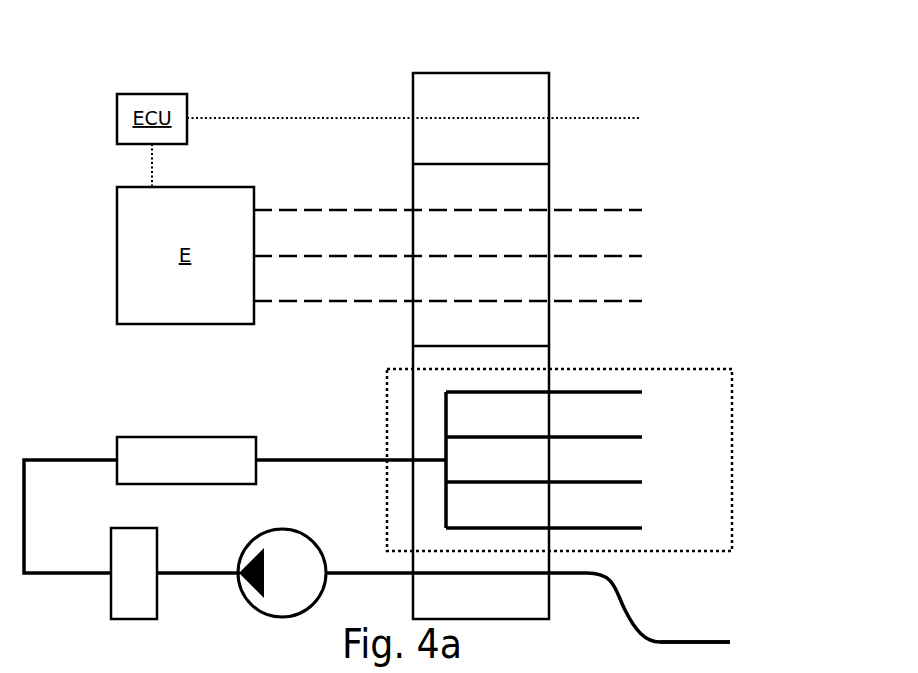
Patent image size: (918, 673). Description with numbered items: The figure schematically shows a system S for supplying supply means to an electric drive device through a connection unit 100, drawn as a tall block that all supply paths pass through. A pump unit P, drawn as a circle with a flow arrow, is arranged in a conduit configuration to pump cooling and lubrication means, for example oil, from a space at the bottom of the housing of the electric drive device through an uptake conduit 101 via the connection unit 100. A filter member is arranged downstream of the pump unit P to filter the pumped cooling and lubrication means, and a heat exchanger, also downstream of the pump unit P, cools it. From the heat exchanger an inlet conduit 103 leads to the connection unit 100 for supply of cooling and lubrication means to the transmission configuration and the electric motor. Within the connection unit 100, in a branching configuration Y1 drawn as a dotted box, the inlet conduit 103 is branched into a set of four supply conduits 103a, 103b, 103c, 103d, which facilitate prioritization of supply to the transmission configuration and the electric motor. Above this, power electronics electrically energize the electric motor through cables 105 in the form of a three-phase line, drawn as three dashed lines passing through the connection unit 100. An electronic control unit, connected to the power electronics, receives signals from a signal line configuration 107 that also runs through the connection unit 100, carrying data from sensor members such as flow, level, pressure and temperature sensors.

The connection unit 100 is at (476, 63).
The uptake conduit 101 is at (686, 640).
The inlet conduit 103 is at (298, 458).
The supply conduit 103a is at (580, 390).
The supply conduit 103b is at (612, 437).
The supply conduit 103c is at (632, 482).
The supply conduit 103d is at (622, 530).
The cables 105 is at (627, 300).
The signal line configuration 107 is at (270, 118).
The branching configuration Y1 is at (688, 369).
The pump unit P is at (263, 533).
The system S is at (291, 42).